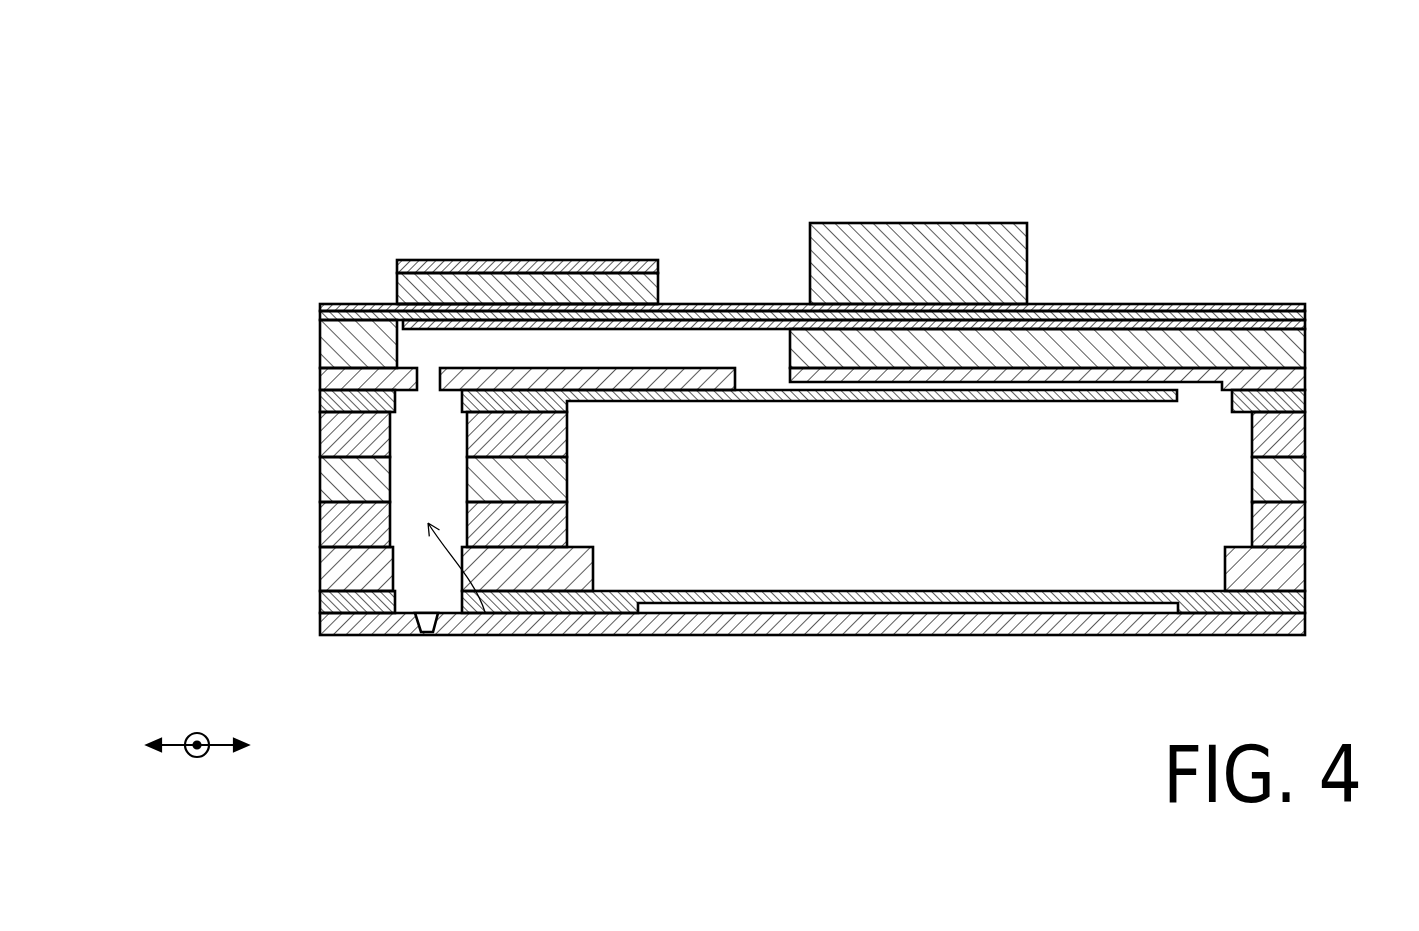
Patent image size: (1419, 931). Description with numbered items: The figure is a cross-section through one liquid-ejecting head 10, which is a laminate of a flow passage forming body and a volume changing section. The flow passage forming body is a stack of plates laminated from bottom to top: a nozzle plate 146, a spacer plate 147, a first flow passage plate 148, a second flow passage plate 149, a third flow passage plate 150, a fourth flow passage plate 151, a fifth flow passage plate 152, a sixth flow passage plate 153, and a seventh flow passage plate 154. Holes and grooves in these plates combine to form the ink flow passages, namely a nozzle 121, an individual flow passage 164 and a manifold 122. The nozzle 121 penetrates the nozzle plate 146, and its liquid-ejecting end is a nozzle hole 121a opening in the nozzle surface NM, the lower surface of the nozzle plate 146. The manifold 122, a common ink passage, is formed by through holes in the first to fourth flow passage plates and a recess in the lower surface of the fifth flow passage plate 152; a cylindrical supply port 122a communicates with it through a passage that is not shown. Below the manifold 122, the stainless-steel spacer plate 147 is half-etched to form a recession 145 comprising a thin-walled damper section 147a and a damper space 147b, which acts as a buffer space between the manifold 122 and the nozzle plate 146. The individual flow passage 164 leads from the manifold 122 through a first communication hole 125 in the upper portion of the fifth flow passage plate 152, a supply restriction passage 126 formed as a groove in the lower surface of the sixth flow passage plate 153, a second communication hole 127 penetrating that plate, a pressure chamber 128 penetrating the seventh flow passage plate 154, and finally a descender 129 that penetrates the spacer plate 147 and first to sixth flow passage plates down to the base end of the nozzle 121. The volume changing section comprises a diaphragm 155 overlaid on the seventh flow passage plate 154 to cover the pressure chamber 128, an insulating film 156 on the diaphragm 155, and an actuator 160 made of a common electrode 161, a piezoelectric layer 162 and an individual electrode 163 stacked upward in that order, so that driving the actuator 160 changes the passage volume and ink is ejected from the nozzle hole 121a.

The liquid-ejecting head 10 is at (839, 114).
The nozzle 121 is at (412, 635).
The nozzle hole 121a is at (425, 635).
The manifold 122 is at (1040, 470).
The supply port 122a is at (986, 262).
The first communication hole 125 is at (1203, 398).
The supply restriction passage 126 is at (1145, 385).
The second communication hole 127 is at (765, 375).
The pressure chamber 128 is at (700, 345).
The descender 129 is at (428, 437).
The recession 145 is at (883, 679).
The nozzle plate 146 is at (1307, 625).
The spacer plate 147 is at (861, 670).
The damper section 147a is at (673, 596).
The damper space 147b is at (764, 662).
The first flow passage plate 148 is at (1307, 570).
The second flow passage plate 149 is at (1307, 525).
The third flow passage plate 150 is at (1307, 478).
The fourth flow passage plate 151 is at (1307, 435).
The fifth flow passage plate 152 is at (1307, 405).
The sixth flow passage plate 153 is at (1307, 375).
The seventh flow passage plate 154 is at (1307, 348).
The diaphragm 155 is at (1307, 320).
The insulating film 156 is at (1307, 310).
The actuator 160 is at (527, 209).
The common electrode 161 is at (427, 165).
The piezoelectric layer 162 is at (519, 285).
The individual electrode 163 is at (465, 268).
The individual flow passage 164 is at (517, 635).
The nozzle surface NM is at (353, 635).